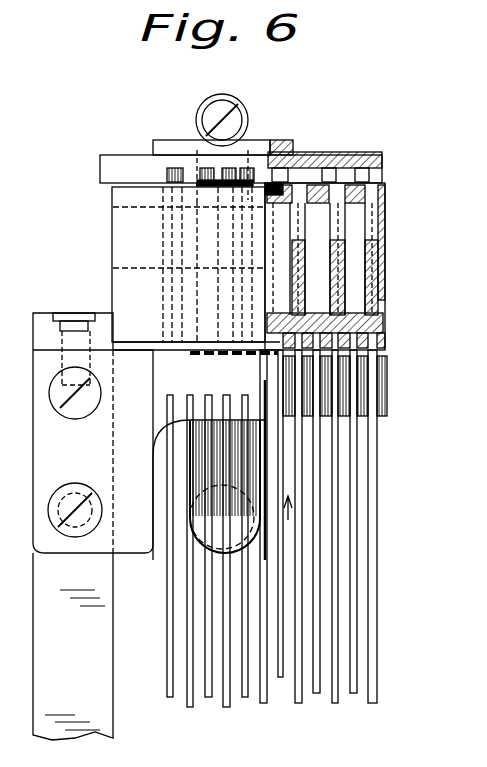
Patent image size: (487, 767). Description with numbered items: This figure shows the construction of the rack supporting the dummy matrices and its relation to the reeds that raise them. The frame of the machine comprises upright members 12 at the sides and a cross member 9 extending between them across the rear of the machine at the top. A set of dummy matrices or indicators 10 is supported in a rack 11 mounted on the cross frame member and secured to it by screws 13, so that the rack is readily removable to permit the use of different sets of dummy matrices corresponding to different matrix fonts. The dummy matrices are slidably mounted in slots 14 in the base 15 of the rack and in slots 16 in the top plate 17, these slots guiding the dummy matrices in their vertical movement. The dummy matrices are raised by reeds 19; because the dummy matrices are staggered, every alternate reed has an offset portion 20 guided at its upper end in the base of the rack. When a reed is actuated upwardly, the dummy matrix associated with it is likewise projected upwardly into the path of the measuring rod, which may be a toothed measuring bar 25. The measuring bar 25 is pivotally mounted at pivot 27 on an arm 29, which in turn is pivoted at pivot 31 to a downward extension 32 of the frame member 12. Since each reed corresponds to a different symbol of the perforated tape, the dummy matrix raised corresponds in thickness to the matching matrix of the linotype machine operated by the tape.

The pivot 27 is at (237, 118).
The measuring bar 25 is at (318, 153).
The slots in the top plate 16 is at (352, 205).
The top plate 17 is at (383, 192).
The dummy matrices 10 is at (347, 232).
The rack 11 is at (383, 250).
The slots in the base 14 is at (383, 296).
The base 15 is at (390, 318).
The offset portion 20 is at (315, 381).
The reeds 19 is at (333, 578).
The arm 29 is at (195, 297).
The downward extension 32 is at (197, 470).
The pivot 31 is at (218, 502).
The cross member 9 is at (93, 433).
The screws 13 is at (82, 313).
The upright member 12 is at (73, 646).